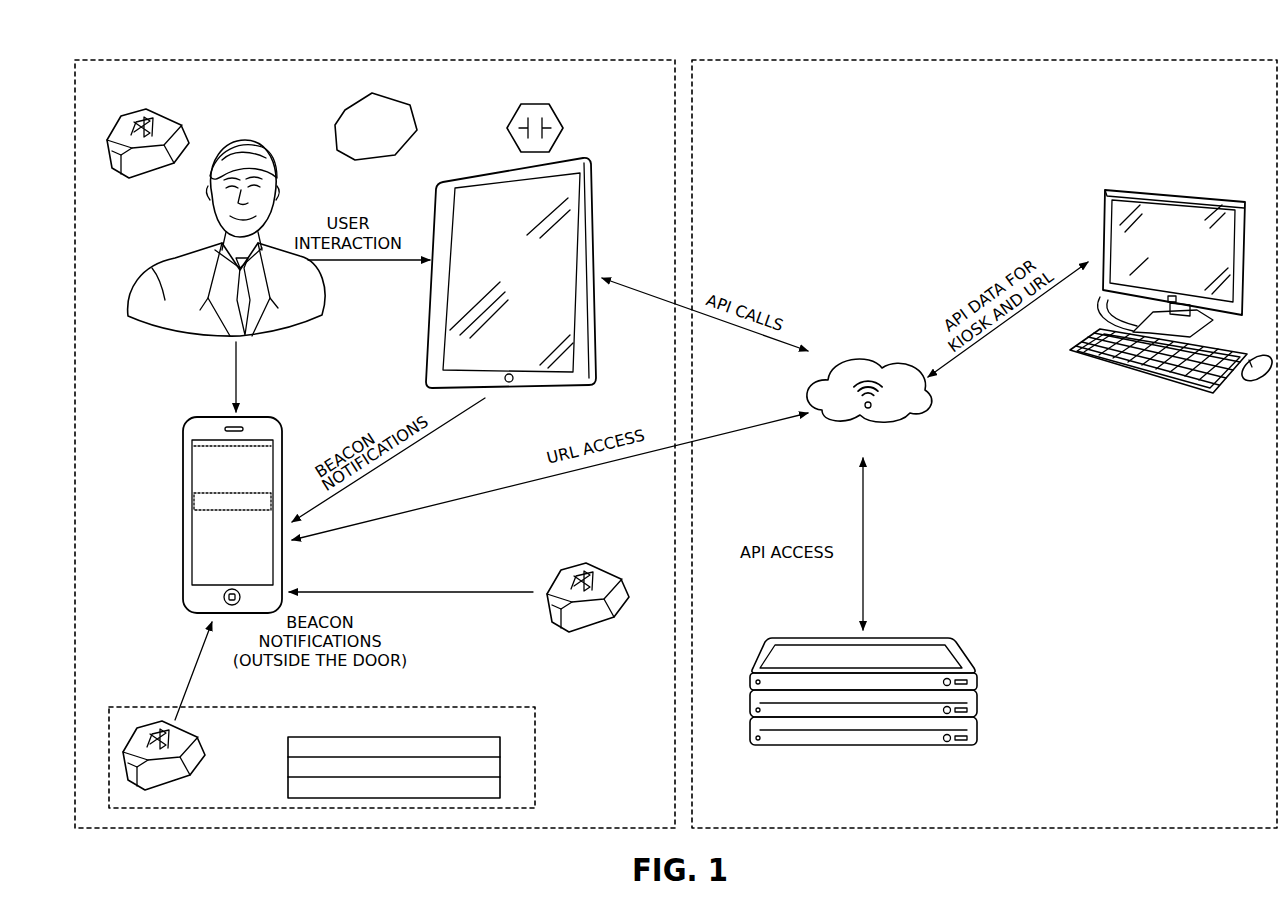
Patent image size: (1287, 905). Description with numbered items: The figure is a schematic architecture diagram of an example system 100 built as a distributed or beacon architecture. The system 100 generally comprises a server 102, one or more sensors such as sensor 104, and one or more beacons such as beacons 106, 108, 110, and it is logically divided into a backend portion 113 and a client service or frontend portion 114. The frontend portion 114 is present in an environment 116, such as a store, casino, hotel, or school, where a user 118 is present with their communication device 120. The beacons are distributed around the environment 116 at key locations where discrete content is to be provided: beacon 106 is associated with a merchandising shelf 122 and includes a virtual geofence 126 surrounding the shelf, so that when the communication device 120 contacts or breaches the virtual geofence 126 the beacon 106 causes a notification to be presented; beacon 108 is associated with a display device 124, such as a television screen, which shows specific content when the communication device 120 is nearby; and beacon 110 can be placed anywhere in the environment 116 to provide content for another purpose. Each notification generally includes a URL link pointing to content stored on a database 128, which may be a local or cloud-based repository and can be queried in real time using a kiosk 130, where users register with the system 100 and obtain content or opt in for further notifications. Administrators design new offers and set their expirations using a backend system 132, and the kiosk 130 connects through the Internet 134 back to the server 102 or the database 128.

The system 100 is at (1179, 35).
The server 102 is at (978, 683).
The sensor 104 is at (567, 128).
The beacon 106 is at (208, 757).
The beacon 108 is at (128, 178).
The beacon 110 is at (606, 572).
The backend portion 113 is at (926, 85).
The frontend portion 114 is at (623, 85).
The environment 116 is at (153, 60).
The user 118 is at (240, 138).
The communication device 120 is at (178, 508).
The merchandising shelf 122 is at (501, 764).
The display device 124 is at (412, 147).
The virtual geofence 126 is at (127, 705).
The database 128 is at (978, 738).
The kiosk 130 is at (601, 173).
The backend system 132 is at (1192, 197).
The Internet 134 is at (867, 362).